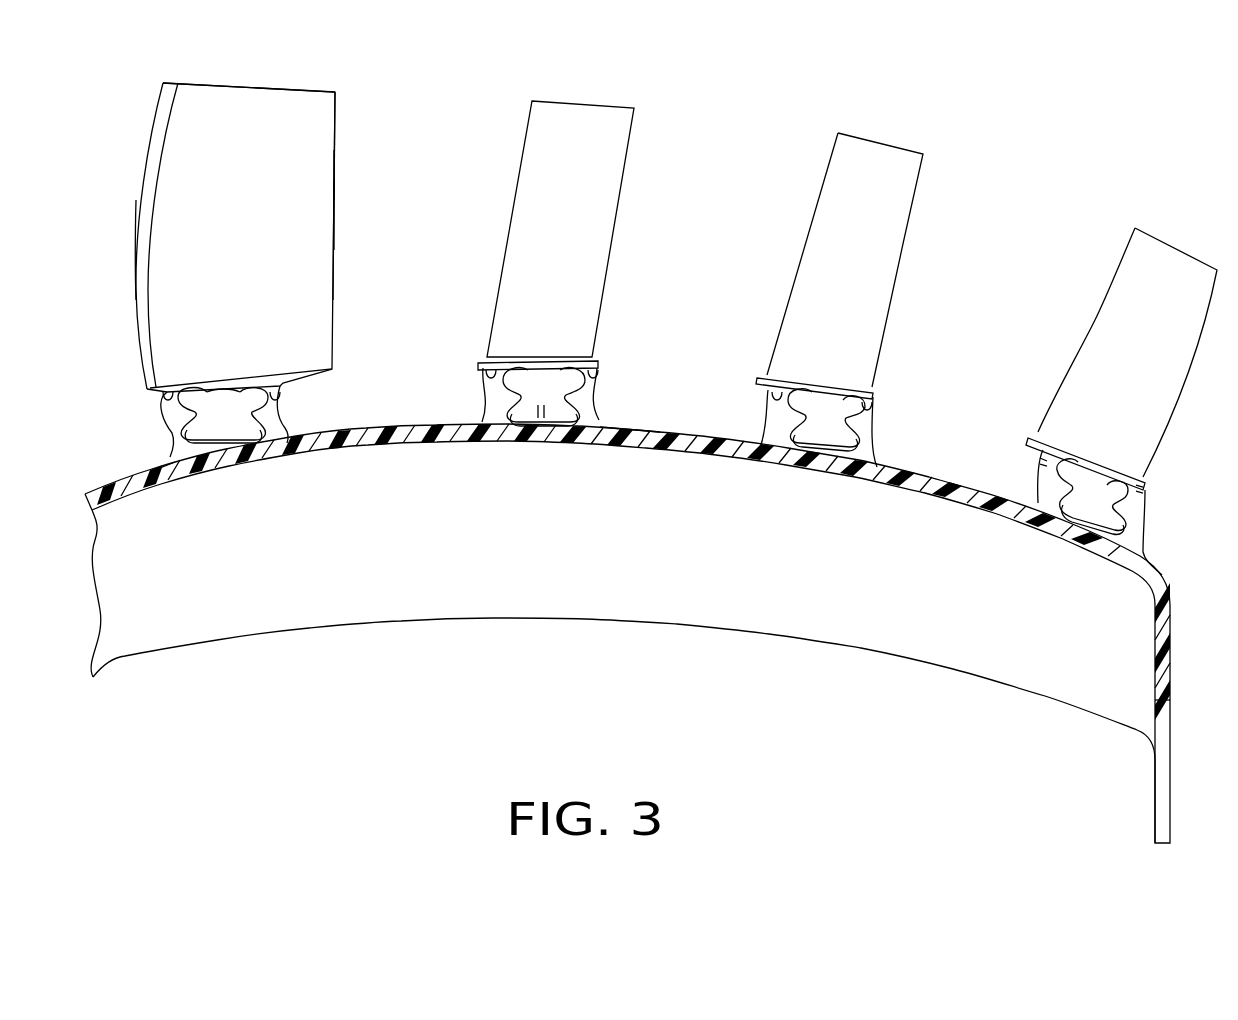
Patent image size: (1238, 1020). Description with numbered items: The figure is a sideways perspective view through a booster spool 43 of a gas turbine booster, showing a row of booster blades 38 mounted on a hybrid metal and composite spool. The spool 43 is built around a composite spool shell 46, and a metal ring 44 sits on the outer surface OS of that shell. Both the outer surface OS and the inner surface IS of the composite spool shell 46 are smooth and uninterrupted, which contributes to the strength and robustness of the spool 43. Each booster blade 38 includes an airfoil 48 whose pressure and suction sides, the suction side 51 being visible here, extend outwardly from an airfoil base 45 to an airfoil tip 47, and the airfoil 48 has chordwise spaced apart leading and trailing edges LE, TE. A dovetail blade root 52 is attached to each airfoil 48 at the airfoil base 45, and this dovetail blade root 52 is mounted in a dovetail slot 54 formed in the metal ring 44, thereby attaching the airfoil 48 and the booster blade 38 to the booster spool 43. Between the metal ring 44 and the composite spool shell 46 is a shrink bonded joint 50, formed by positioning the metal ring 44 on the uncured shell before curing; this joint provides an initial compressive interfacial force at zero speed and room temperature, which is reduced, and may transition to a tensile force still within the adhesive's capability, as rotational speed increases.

The booster blade 38 is at (158, 102).
The booster spool 43 is at (615, 448).
The metal ring 44 is at (287, 418).
The airfoil base 45 is at (227, 383).
The composite spool shell 46 is at (630, 427).
The airfoil tip 47 is at (250, 84).
The airfoil 48 is at (293, 107).
The shrink bonded joint 50 is at (170, 453).
The suction side 51 is at (292, 208).
The dovetail blade root 52 is at (220, 415).
The dovetail slot 54 is at (257, 408).
The leading edge LE is at (134, 263).
The trailing edge TE is at (336, 170).
The outer surface OS is at (887, 465).
The inner surface IS is at (593, 582).